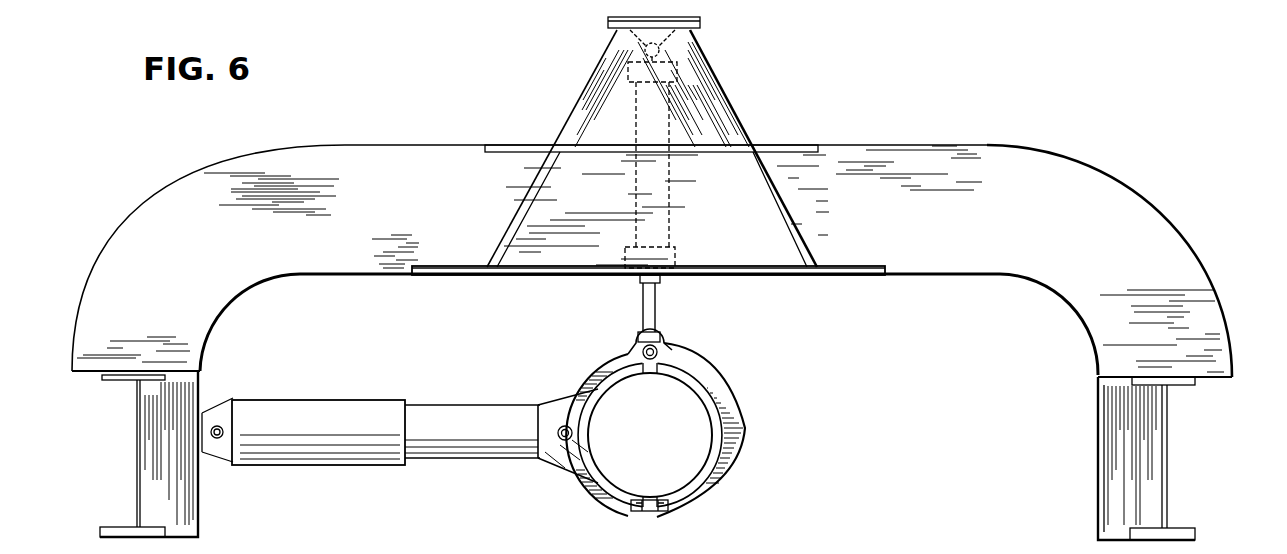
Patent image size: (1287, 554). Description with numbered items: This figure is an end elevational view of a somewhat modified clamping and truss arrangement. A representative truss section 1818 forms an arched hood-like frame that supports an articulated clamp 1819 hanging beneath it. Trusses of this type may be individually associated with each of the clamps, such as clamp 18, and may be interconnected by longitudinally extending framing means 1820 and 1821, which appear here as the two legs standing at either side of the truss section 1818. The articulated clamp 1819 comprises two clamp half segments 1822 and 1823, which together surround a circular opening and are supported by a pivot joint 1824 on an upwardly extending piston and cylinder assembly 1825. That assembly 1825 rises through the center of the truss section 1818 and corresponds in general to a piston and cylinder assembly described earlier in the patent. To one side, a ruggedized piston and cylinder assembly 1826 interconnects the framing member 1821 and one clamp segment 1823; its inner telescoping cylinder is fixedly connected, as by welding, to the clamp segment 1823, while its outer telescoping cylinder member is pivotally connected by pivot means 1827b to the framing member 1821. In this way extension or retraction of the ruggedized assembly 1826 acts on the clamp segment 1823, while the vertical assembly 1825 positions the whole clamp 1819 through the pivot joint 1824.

The clamp 18 is at (893, 126).
The truss section 1818 is at (1082, 177).
The articulated clamp 1819 is at (665, 358).
The longitudinally extending framing means 1820 is at (1168, 460).
The framing member 1821 is at (182, 482).
The clamp half segment 1822 is at (740, 423).
The clamp half segment 1823 is at (593, 480).
The pivot joint 1824 is at (660, 347).
The piston and cylinder assembly 1825 is at (665, 97).
The ruggedized piston and cylinder assembly 1826 is at (345, 450).
The pivot means 1827b is at (213, 420).